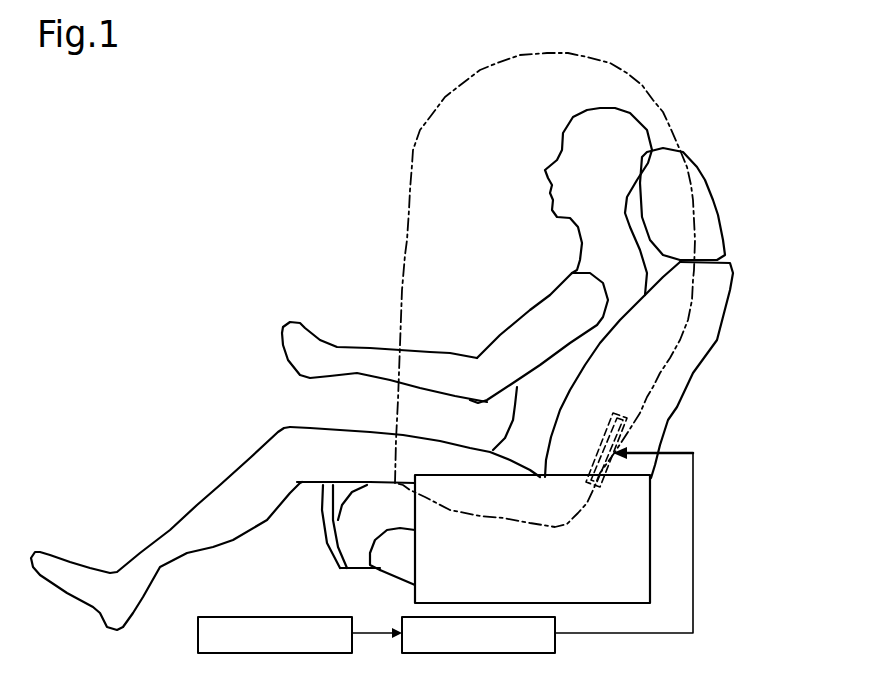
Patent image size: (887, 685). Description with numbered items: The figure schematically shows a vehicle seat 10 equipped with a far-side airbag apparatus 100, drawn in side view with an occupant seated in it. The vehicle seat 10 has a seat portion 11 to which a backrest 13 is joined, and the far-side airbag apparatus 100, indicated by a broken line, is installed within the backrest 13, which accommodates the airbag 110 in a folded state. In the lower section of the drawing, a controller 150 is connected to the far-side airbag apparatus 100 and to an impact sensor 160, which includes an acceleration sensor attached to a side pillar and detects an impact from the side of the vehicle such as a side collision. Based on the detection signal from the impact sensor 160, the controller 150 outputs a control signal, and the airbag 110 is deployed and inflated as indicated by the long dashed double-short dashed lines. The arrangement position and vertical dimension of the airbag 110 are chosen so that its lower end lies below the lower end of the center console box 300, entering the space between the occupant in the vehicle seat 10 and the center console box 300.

The vehicle seat 10 is at (745, 377).
The seat portion 11 is at (328, 540).
The backrest 13 is at (728, 285).
The far-side airbag apparatus 100 is at (627, 430).
The airbag 110 is at (405, 242).
The controller 150 is at (527, 653).
The impact sensor 160 is at (323, 653).
The center console box 300 is at (582, 607).